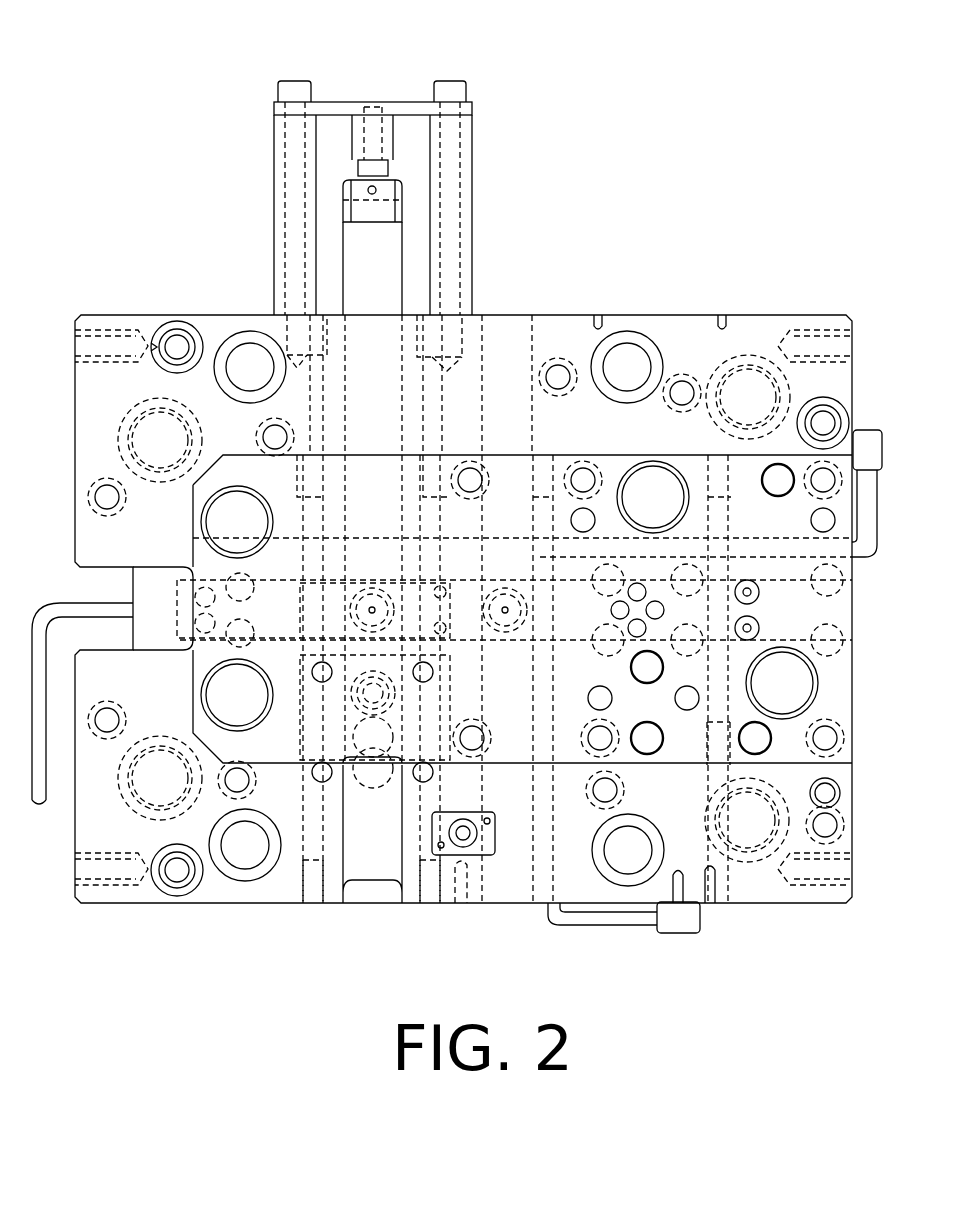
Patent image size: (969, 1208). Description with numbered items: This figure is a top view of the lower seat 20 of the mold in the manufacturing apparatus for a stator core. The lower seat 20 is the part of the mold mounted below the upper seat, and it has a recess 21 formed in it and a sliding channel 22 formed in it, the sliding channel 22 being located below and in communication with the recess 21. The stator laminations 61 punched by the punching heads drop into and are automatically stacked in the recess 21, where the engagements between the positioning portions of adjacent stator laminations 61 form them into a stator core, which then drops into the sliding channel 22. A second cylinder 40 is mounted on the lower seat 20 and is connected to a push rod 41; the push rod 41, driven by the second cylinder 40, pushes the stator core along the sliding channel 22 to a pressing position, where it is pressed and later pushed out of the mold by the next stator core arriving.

The lower seat 20 is at (690, 328).
The recess 21 is at (387, 633).
The sliding channel 22 is at (390, 665).
The second cylinder 40 is at (410, 108).
The push rod 41 is at (373, 298).
The stator laminations 61 is at (383, 593).